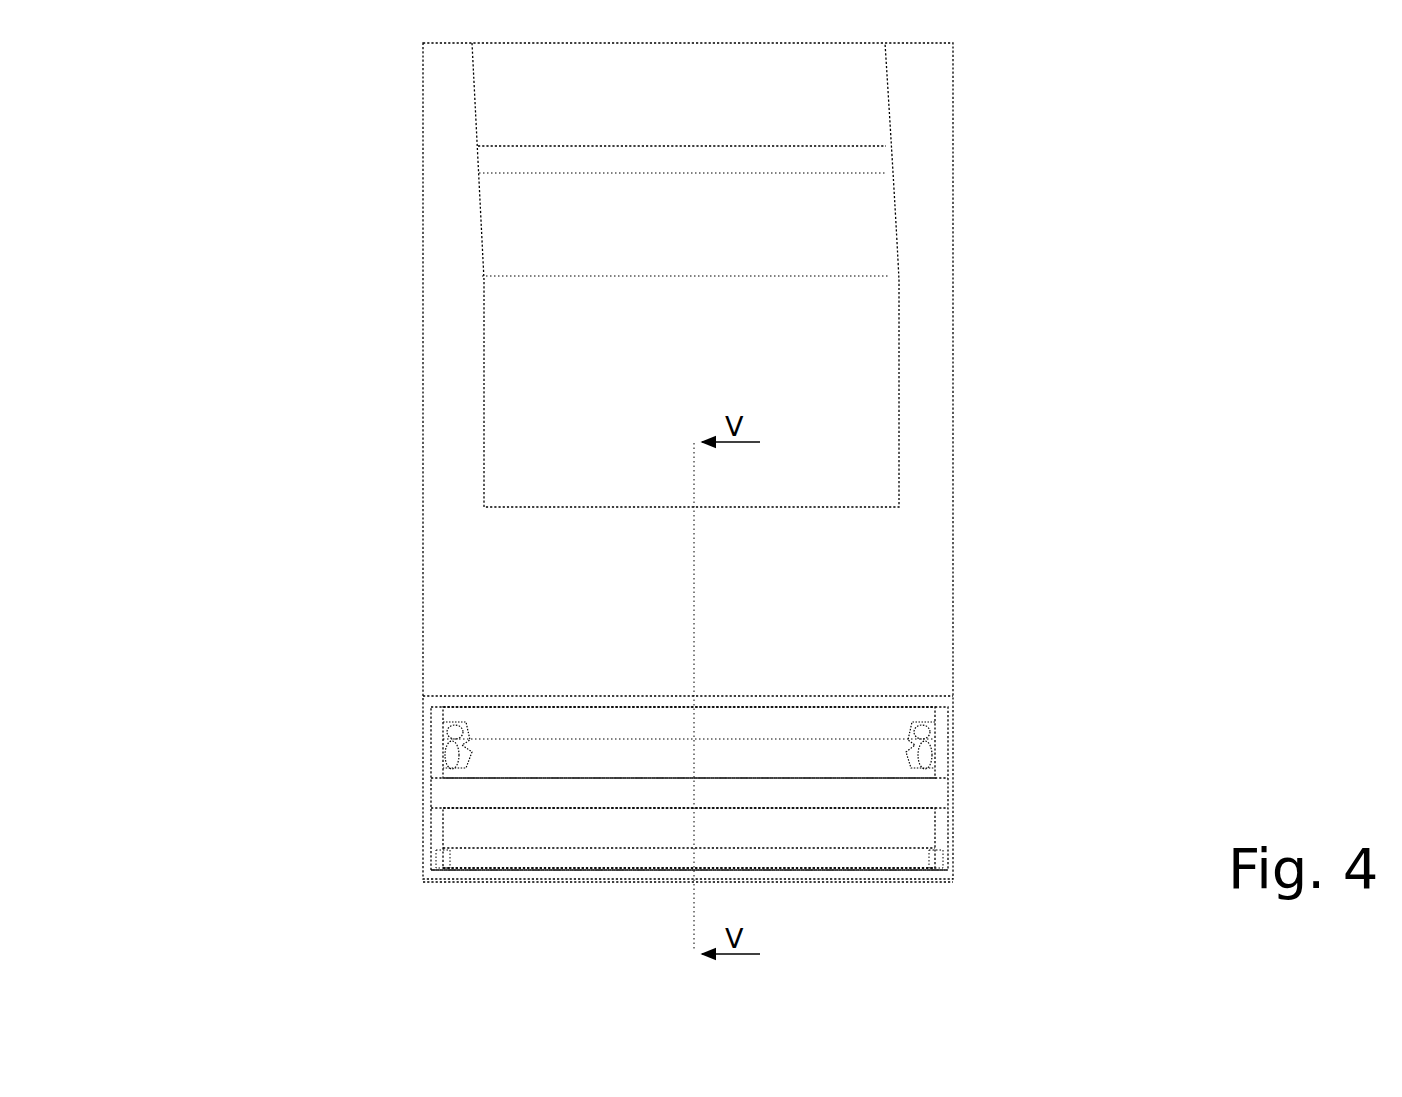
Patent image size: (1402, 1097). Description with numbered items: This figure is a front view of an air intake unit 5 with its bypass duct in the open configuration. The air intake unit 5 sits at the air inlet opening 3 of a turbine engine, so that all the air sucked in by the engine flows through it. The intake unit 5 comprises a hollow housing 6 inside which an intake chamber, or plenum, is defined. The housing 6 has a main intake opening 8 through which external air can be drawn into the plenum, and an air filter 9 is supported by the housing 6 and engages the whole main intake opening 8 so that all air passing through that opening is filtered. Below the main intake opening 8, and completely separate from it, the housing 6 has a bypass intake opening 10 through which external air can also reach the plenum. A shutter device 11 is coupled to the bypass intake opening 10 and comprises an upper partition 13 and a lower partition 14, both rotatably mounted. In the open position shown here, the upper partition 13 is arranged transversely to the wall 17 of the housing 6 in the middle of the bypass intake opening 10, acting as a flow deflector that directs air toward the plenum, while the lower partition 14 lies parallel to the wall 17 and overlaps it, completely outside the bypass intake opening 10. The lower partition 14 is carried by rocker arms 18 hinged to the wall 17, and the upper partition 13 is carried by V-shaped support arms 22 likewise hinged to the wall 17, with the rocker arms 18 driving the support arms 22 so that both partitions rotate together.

The air inlet opening 3 is at (150, 379).
The air intake unit 5 is at (188, 876).
The housing 6 is at (1015, 396).
The main intake opening 8 is at (572, 497).
The air filter 9 is at (858, 238).
The bypass intake opening 10 is at (682, 857).
The shutter device 11 is at (363, 781).
The upper partition 13 is at (900, 797).
The lower partition 14 is at (878, 856).
The wall 17 is at (910, 596).
The rocker arm 18 is at (478, 749).
The support arm 22 is at (440, 840).